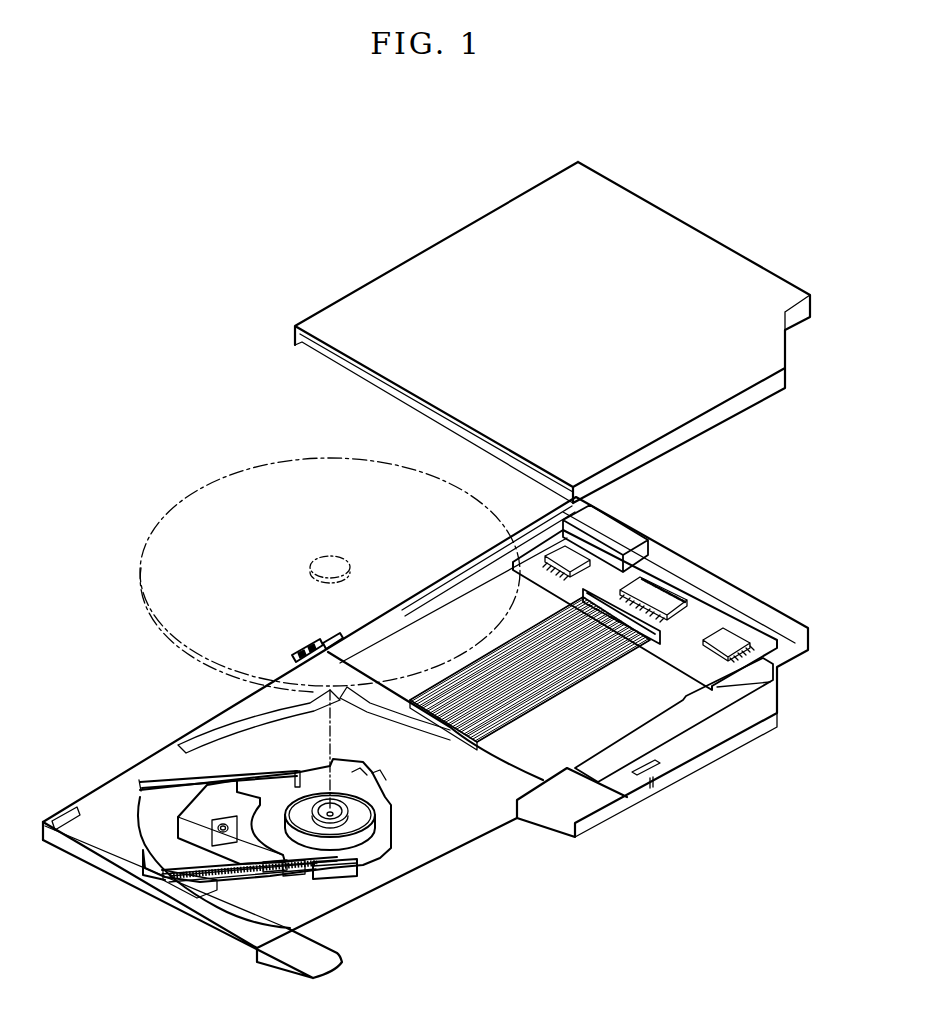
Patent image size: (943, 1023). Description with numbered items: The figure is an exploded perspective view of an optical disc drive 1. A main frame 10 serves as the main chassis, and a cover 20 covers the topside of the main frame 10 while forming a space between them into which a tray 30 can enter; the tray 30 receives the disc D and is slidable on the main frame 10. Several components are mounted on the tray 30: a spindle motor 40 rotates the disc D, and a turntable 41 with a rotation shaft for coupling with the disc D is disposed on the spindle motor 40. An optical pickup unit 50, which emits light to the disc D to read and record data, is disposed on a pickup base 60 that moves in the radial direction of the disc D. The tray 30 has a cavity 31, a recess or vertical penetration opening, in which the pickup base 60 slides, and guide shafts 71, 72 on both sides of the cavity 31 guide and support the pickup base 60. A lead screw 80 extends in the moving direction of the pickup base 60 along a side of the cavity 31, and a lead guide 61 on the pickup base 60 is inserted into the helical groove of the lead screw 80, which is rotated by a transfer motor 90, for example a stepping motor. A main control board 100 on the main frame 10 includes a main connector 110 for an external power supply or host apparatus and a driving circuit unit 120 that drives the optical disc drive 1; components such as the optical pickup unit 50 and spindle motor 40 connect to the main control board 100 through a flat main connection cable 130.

The optical disc drive 1 is at (182, 303).
The main frame 10 is at (698, 772).
The cover 20 is at (392, 284).
The tray 30 is at (235, 940).
The cavity 31 is at (268, 806).
The spindle motor 40 is at (368, 853).
The turntable 41 is at (337, 808).
The optical pickup unit 50 is at (222, 818).
The pickup base 60 is at (183, 793).
The lead guide 61 is at (232, 882).
The guide shaft 71 is at (155, 866).
The guide shaft 72 is at (185, 778).
The lead screw 80 is at (297, 876).
The transfer motor 90 is at (350, 873).
The main control board 100 is at (712, 603).
The main connector 110 is at (622, 540).
The driving circuit unit 120 is at (742, 640).
The main connection cable 130 is at (616, 660).
The disc D is at (190, 510).